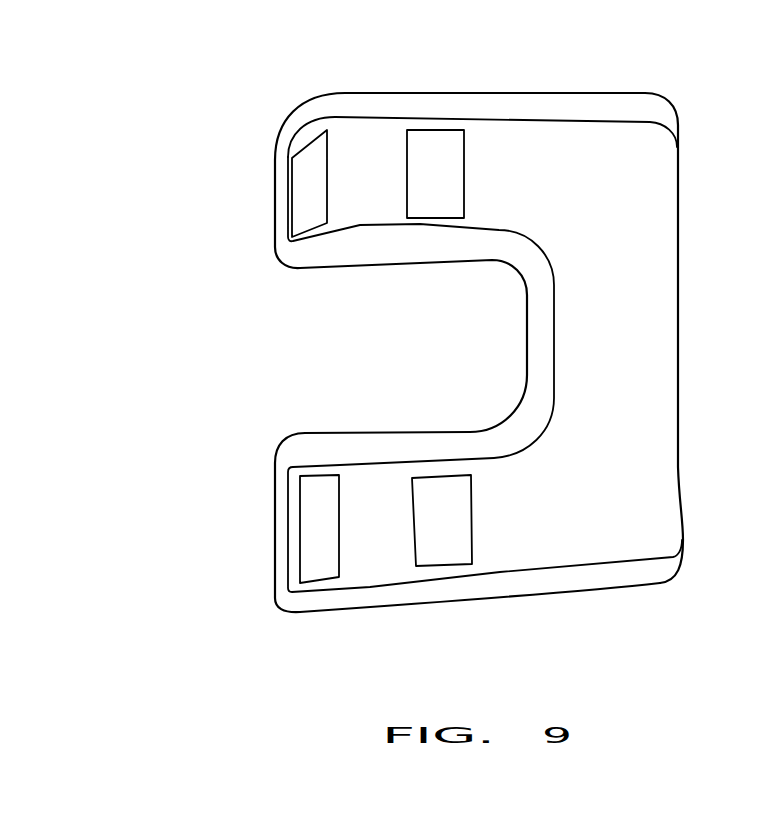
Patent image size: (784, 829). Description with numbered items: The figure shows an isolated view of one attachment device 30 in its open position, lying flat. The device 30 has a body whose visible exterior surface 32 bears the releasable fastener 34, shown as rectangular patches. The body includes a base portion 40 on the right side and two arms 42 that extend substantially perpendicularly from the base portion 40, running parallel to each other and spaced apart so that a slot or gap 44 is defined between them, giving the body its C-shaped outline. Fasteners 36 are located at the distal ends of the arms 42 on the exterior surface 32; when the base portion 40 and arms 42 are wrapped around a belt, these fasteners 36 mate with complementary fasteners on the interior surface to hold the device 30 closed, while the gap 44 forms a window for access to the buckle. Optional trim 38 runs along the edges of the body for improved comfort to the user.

The attachment device 30 is at (684, 159).
The exterior surface 32 is at (642, 503).
The releasable fastener 34 is at (445, 172).
The fasteners 36 is at (303, 192).
The trim 38 is at (447, 103).
The base portion 40 is at (617, 342).
The arms 42 is at (357, 135).
The gap 44 is at (353, 352).